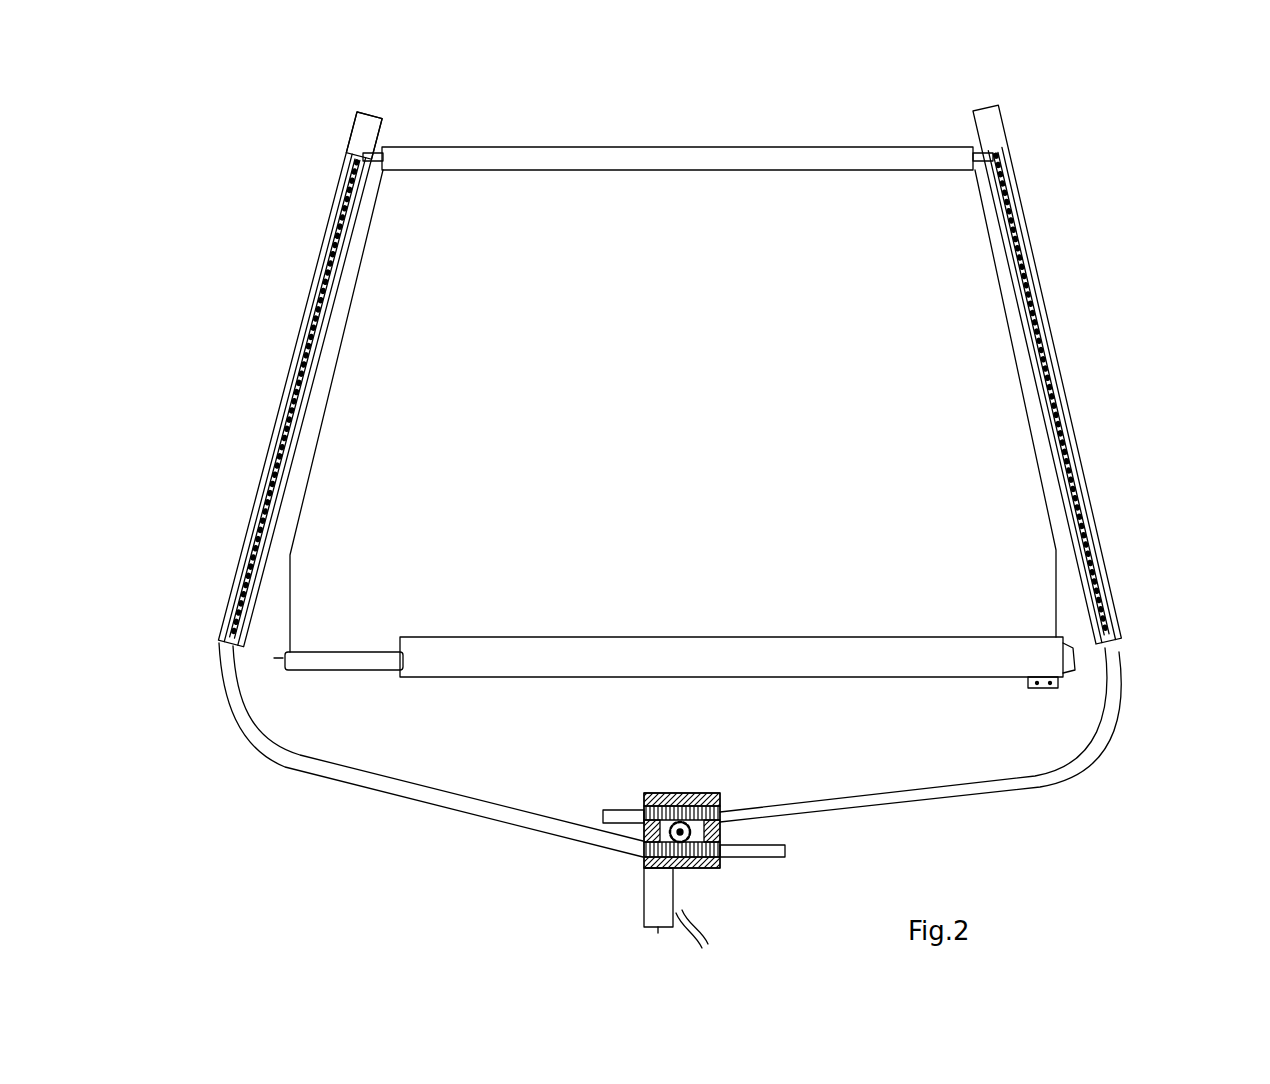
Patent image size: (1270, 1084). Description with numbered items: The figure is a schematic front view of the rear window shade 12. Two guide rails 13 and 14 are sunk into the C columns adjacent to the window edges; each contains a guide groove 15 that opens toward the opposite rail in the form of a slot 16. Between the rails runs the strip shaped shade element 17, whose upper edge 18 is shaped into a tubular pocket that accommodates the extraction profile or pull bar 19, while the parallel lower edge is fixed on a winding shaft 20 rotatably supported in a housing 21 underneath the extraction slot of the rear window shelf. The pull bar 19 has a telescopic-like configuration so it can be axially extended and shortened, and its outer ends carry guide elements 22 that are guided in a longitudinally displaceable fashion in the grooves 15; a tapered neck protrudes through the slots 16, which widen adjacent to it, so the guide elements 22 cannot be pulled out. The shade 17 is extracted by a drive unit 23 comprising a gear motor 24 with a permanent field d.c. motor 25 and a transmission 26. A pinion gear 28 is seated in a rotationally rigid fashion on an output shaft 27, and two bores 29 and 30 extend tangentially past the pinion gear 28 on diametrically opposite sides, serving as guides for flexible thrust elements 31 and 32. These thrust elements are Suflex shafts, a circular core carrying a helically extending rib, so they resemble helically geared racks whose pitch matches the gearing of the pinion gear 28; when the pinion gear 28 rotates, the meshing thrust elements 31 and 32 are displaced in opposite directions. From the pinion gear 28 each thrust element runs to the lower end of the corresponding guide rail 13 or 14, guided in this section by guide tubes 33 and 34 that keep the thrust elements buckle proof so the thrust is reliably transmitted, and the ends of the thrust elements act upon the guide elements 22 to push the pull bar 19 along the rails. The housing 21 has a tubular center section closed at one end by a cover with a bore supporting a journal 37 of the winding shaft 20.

The rear window shade 12 is at (1130, 176).
The guide rail 13 is at (322, 350).
The guide rail 14 is at (1048, 316).
The guide groove 15 is at (368, 141).
The slot 16 is at (383, 153).
The strip shaped shade element 17 is at (716, 403).
The edge 18 is at (700, 156).
The pull bar 19 is at (978, 153).
The winding shaft 20 is at (342, 656).
The housing 21 is at (622, 650).
The guide elements 22 is at (338, 172).
The drive unit 23 is at (669, 827).
The gear motor 24 is at (615, 868).
The permanent field d.c. motor 25 is at (668, 890).
The transmission 26 is at (642, 864).
The output shaft 27 is at (660, 793).
The pinion gear 28 is at (722, 833).
The bore 29 is at (692, 793).
The bore 30 is at (716, 862).
The thrust element 31 is at (332, 354).
The thrust element 32 is at (1082, 442).
The guide tube 33 is at (960, 792).
The guide tube 34 is at (415, 792).
The journal 37 is at (276, 666).